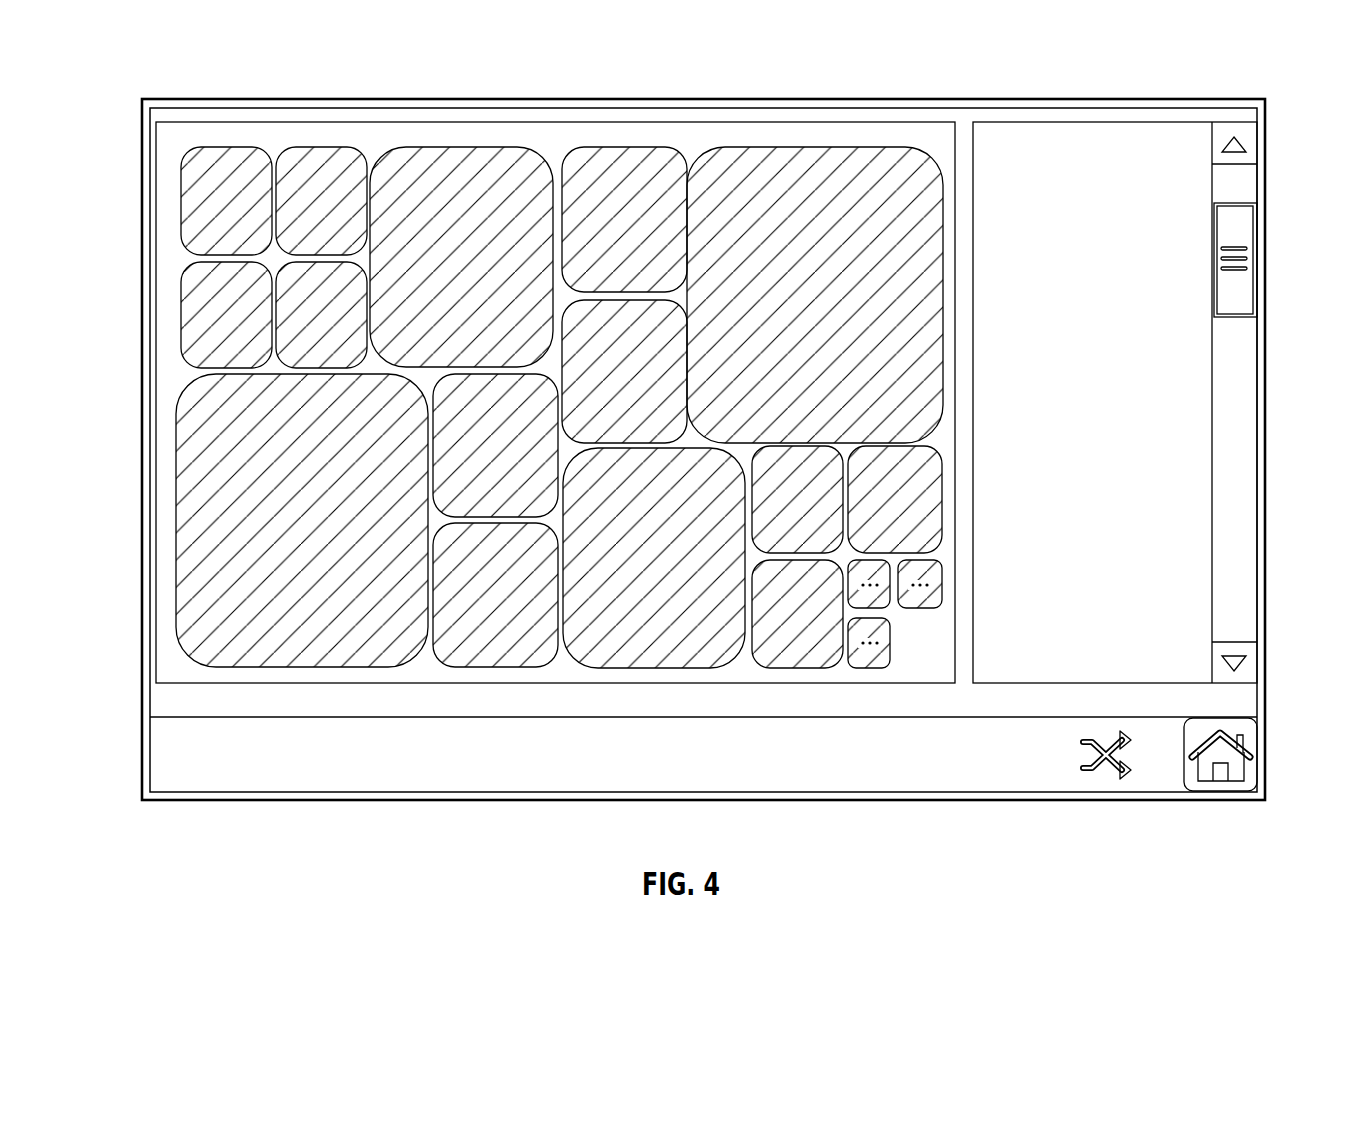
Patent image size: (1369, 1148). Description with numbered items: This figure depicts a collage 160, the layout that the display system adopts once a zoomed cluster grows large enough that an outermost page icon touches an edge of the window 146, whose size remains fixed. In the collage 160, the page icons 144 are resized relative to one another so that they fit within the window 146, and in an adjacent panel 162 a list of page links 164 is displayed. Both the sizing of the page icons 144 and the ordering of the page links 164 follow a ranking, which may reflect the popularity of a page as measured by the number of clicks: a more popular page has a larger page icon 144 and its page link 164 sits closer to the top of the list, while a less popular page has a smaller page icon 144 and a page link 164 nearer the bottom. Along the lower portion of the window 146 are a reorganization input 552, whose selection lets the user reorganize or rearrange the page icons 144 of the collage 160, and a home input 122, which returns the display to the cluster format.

The collage 160 is at (170, 387).
The page icons 144 is at (176, 580).
The window 146 is at (201, 720).
The adjacent panel 162 is at (1228, 700).
The page links 164 is at (1158, 290).
The home input 122 is at (1245, 762).
The reorganization input 552 is at (1115, 773).